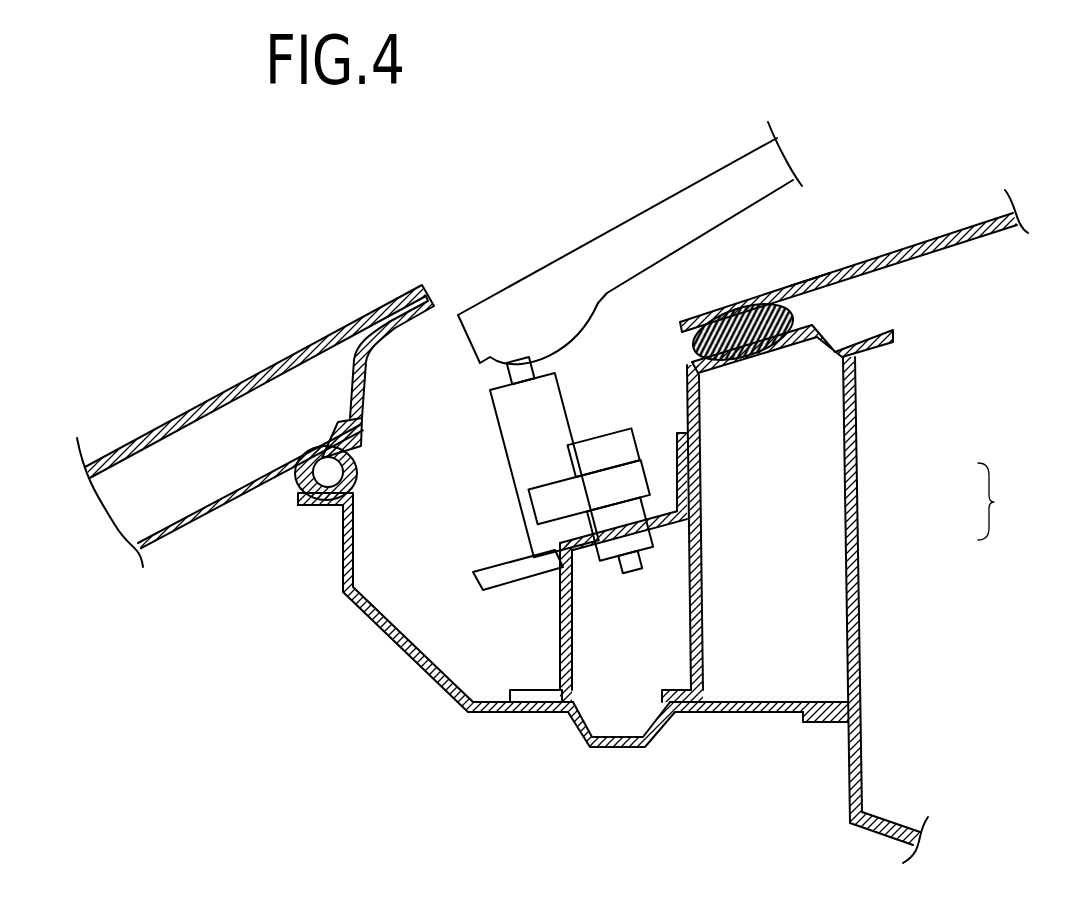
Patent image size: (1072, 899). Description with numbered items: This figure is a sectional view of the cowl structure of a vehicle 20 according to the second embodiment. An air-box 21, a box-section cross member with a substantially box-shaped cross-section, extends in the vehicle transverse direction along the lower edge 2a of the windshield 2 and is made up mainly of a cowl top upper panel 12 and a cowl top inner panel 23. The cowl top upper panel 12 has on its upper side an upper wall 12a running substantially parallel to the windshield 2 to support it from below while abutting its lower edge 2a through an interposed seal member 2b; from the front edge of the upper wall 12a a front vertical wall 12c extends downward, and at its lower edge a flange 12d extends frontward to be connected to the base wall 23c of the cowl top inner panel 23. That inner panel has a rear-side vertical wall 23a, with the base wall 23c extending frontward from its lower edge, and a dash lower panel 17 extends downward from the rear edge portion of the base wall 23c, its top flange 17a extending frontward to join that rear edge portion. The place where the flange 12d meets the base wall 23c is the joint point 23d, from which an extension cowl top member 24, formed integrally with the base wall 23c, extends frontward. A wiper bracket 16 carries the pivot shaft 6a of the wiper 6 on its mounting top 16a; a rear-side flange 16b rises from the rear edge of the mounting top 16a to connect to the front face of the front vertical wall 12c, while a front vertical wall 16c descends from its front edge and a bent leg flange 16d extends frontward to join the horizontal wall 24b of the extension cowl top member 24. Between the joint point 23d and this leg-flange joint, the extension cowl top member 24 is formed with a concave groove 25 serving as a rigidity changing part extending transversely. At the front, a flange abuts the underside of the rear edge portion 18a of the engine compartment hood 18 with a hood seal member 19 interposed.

The windshield 2 is at (958, 223).
The lower edge 2a is at (690, 322).
The seal member 2b is at (800, 286).
The wiper 6 is at (658, 202).
The pivot shaft 6a is at (594, 438).
The cowl top upper panel 12 is at (703, 480).
The upper wall 12a is at (752, 364).
The front vertical wall 12c is at (703, 582).
The flange 12d is at (687, 690).
The wiper bracket 16 is at (556, 606).
The mounting top 16a is at (672, 527).
The rear-side flange 16b is at (677, 478).
The front vertical wall 16c is at (560, 622).
The leg flange 16d is at (522, 690).
The dash lower panel 17 is at (869, 787).
The flange 17a is at (823, 722).
The engine compartment hood 18 is at (178, 413).
The rear edge portion 18a is at (367, 412).
The hood seal member 19 is at (352, 478).
The vehicle 20 is at (272, 652).
The air-box 21 is at (1005, 501).
The cowl top inner panel 23 is at (861, 533).
The rear-side vertical wall 23a is at (861, 602).
The base wall 23c is at (753, 712).
The joint point 23d is at (688, 712).
The extension cowl top member 24 is at (412, 662).
The horizontal wall 24b is at (550, 713).
The concave groove 25 is at (617, 745).